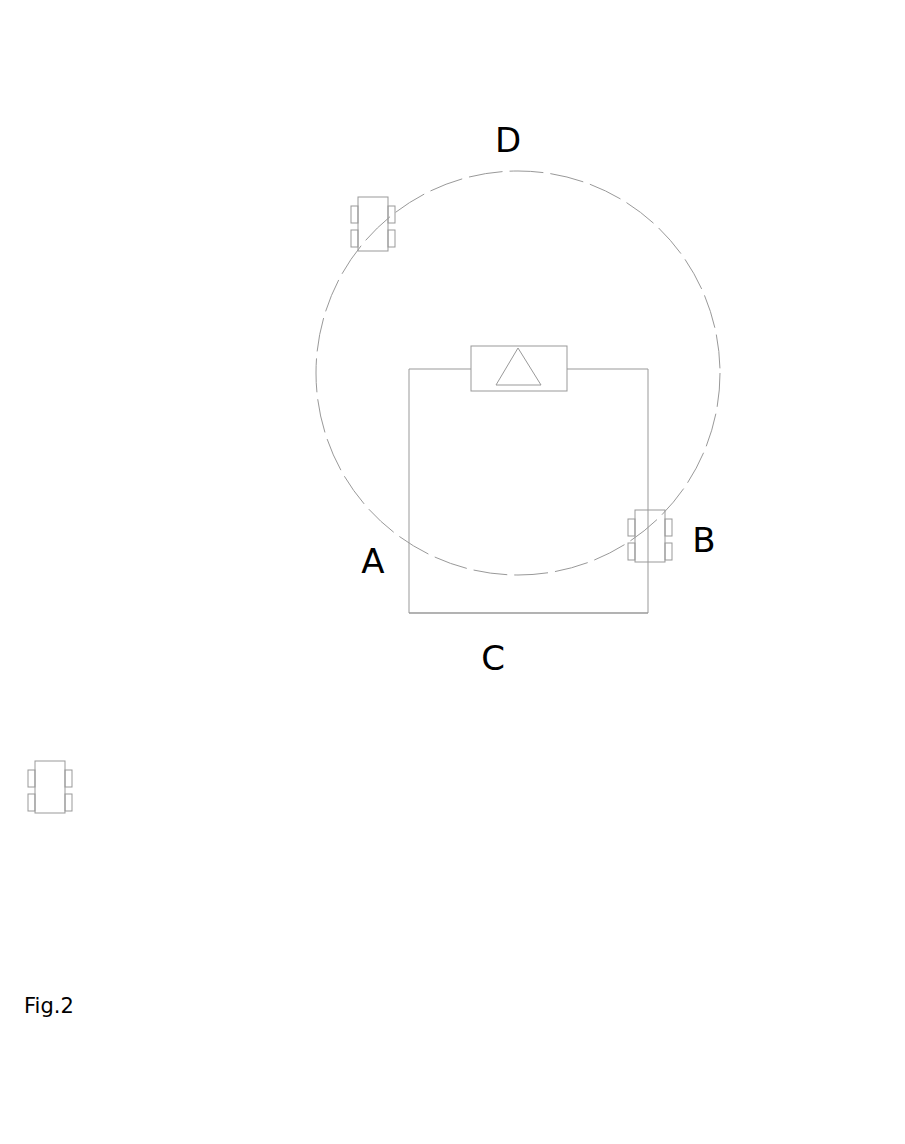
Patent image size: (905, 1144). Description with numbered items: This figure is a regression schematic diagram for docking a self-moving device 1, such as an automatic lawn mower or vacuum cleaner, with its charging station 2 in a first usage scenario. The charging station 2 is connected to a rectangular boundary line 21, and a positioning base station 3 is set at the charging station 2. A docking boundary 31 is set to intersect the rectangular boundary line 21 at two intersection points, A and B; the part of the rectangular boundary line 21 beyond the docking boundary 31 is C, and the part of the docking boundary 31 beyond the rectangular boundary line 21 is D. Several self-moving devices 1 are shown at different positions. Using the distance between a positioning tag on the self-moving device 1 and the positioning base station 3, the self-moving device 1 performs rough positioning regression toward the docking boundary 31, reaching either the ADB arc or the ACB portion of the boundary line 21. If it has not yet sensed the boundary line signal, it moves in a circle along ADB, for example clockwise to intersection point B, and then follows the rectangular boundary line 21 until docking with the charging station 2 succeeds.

The self-moving device 1 is at (380, 208).
The charging station 2 is at (485, 378).
The boundary line 21 is at (529, 614).
The positioning base station 3 is at (520, 373).
The docking boundary 31 is at (327, 311).